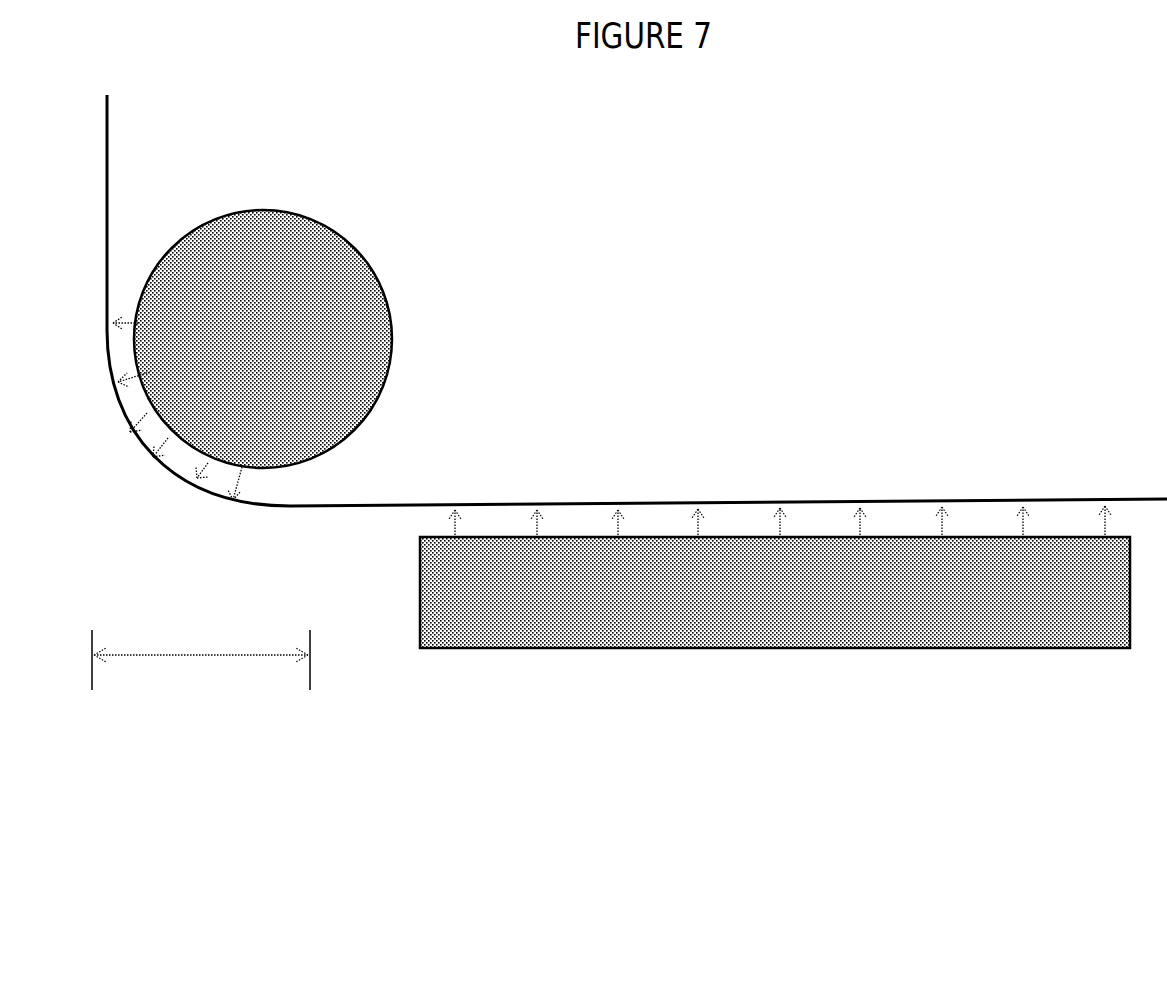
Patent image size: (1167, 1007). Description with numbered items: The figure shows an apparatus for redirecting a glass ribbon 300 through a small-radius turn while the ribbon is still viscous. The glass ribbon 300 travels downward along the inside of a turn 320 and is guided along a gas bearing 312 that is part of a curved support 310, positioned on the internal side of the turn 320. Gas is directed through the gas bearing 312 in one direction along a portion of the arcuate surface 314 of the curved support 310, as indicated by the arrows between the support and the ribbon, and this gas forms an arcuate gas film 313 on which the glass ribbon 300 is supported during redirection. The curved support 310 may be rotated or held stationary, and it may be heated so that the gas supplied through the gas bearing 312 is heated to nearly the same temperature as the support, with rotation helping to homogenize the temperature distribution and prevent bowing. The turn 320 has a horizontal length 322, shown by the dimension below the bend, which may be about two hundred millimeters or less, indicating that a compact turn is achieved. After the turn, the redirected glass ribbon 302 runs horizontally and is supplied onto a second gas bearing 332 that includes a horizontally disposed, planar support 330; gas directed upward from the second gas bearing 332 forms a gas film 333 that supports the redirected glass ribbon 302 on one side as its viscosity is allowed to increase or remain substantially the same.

The glass ribbon 300 is at (108, 183).
The redirected glass ribbon 302 is at (548, 500).
The curved support 310 is at (285, 318).
The gas bearing 312 is at (265, 385).
The gas film 313 is at (268, 483).
The arcuate surface 314 is at (398, 322).
The turn 320 is at (135, 500).
The horizontal length 322 is at (201, 686).
The planar support 330 is at (775, 638).
The second gas bearing 332 is at (638, 621).
The gas film 333 is at (1072, 511).